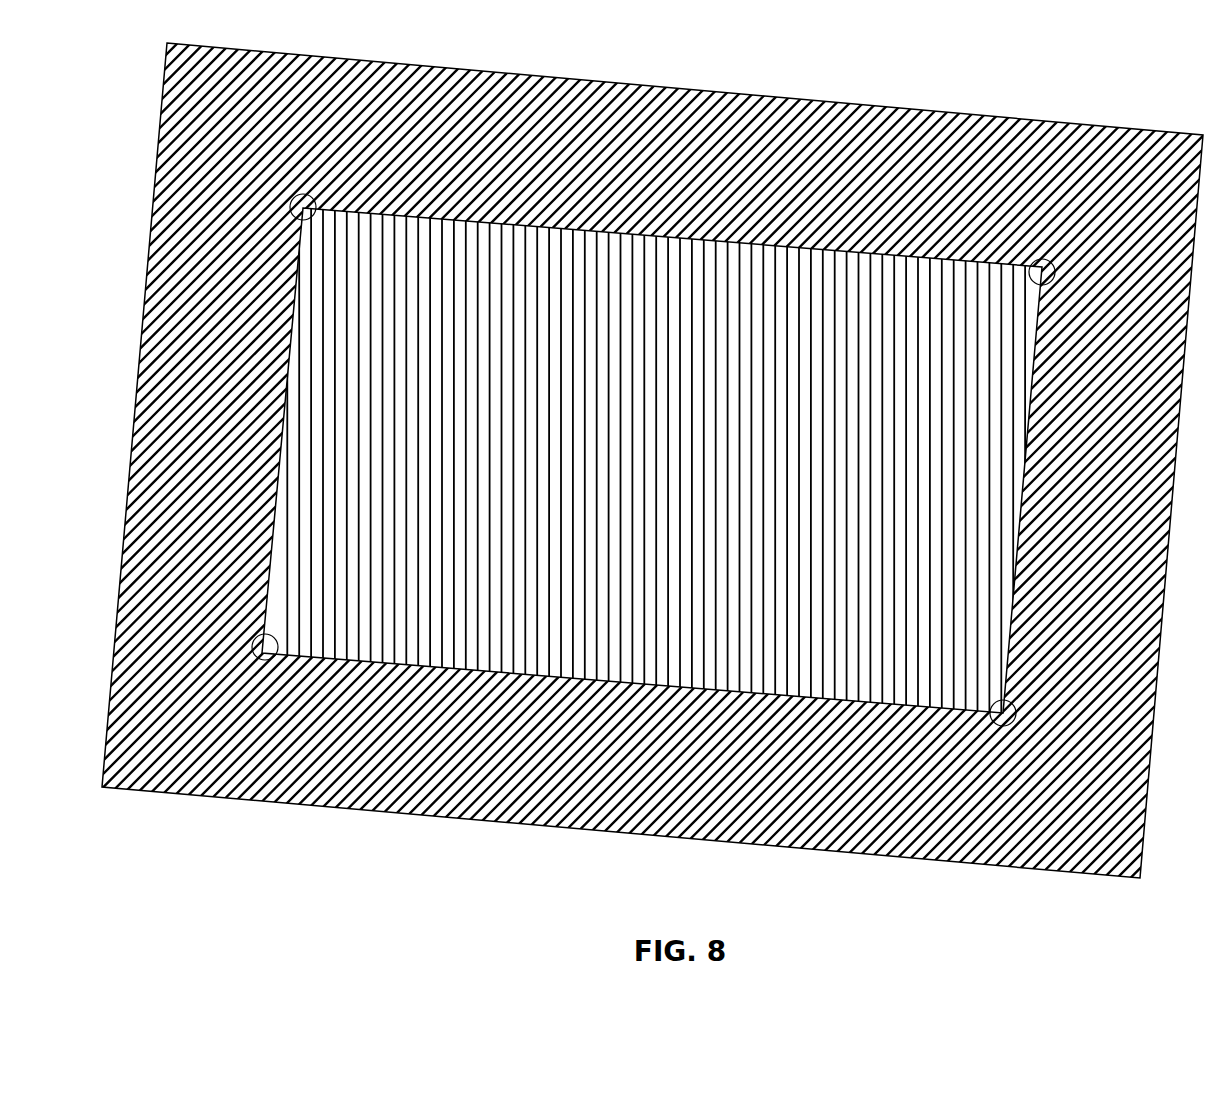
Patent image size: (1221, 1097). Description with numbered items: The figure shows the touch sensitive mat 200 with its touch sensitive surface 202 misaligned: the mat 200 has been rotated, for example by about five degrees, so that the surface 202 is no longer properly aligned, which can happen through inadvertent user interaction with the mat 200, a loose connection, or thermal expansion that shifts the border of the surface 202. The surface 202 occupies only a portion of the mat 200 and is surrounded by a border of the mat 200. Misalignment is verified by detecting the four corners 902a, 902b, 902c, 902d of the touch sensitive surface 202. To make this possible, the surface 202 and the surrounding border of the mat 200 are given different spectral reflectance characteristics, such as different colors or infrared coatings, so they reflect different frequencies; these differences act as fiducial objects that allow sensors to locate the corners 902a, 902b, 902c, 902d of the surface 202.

The touch sensitive mat 200 is at (1040, 118).
The touch sensitive surface 202 is at (424, 194).
The corner 902a is at (301, 194).
The corner 902b is at (1055, 272).
The corner 902c is at (1002, 727).
The corner 902d is at (263, 661).